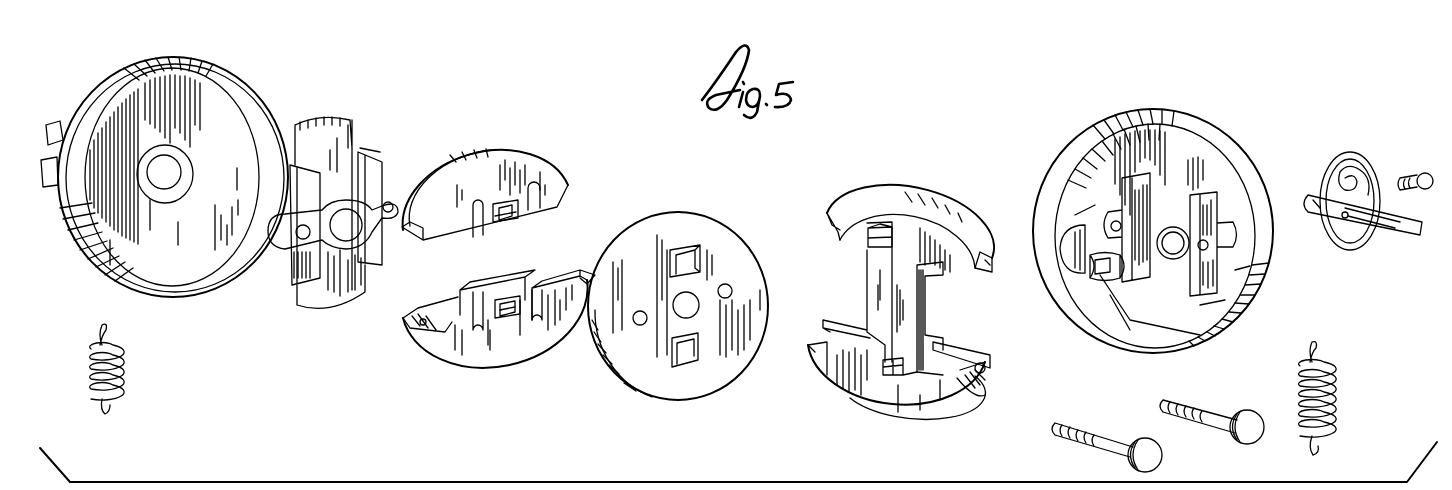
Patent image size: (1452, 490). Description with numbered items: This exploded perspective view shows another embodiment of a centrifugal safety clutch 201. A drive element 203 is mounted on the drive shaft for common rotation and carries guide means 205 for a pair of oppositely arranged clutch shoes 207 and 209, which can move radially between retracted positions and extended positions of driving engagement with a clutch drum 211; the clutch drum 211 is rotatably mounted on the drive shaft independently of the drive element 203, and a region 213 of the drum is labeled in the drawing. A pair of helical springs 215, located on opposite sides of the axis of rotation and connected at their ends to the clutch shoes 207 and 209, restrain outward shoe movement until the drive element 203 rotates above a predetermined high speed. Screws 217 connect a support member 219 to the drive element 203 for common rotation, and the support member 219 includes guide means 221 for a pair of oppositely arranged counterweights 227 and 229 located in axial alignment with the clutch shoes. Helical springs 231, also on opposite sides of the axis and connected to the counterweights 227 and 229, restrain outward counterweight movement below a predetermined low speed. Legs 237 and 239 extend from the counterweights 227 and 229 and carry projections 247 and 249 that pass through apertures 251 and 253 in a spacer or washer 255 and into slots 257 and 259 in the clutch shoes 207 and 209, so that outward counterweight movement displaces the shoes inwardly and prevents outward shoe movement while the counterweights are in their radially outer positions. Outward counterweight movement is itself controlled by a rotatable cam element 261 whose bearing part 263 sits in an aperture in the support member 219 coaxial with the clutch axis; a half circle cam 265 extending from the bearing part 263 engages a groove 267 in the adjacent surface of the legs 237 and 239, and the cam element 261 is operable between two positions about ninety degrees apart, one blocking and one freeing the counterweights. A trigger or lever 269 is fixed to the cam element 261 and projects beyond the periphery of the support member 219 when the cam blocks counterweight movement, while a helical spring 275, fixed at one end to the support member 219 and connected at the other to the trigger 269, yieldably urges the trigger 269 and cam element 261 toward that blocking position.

The safety clutch 201 is at (742, 170).
The drive element 203 is at (372, 111).
The guide means 205 is at (393, 162).
The clutch shoe 207 is at (494, 163).
The clutch shoe 209 is at (470, 352).
The clutch drum 211 is at (229, 106).
The dial disc teeth 213 is at (71, 103).
The helical springs 215 is at (110, 360).
The screws 217 is at (1110, 410).
The support member 219 is at (1244, 139).
The guide means 221 is at (1198, 294).
The counterweight 227 is at (892, 208).
The counterweight 229 is at (858, 380).
The helical springs 231 is at (1312, 382).
The leg 237 is at (910, 299).
The leg 239 is at (880, 275).
The projection 247 is at (892, 372).
The projection 249 is at (869, 248).
The aperture 251 is at (685, 367).
The aperture 253 is at (686, 247).
The spacer or washer 255 is at (668, 307).
The aperture or slot 257 is at (512, 213).
The aperture or slot 259 is at (508, 318).
The cam element 261 is at (1123, 290).
The bearing part 263 is at (1085, 270).
The half circle cam 265 is at (1068, 237).
The groove 267 is at (945, 324).
The trigger or lever 269 is at (1405, 236).
The helical spring 275 is at (1390, 144).